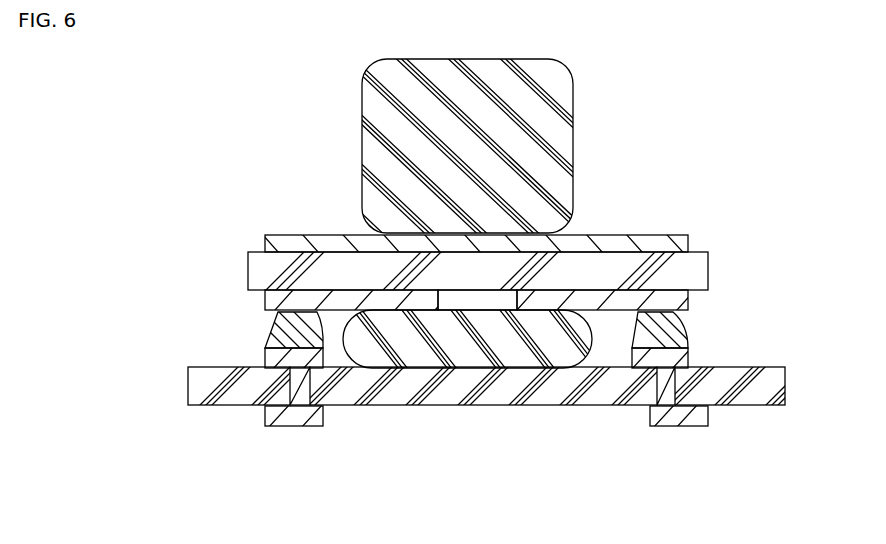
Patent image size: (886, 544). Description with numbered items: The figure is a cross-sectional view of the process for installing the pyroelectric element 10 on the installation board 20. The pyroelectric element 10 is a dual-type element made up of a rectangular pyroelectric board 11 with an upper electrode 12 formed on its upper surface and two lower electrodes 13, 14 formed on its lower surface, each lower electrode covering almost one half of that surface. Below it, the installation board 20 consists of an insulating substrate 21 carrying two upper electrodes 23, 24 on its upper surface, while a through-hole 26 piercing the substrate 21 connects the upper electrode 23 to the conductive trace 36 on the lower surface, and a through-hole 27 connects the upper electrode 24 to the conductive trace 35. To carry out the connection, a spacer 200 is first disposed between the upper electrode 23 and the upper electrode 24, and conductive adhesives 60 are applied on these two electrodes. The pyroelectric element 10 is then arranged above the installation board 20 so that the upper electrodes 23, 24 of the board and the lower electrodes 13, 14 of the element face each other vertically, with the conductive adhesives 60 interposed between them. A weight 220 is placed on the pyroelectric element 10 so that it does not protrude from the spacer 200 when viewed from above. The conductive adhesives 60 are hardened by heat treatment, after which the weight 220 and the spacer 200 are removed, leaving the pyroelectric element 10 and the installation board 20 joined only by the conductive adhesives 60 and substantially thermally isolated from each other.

The pyroelectric element 10 is at (468, 246).
The pyroelectric board 11 is at (708, 268).
The upper electrode 12 is at (683, 234).
The lower electrode 13 is at (266, 300).
The lower electrode 14 is at (690, 303).
The installation board 20 is at (208, 410).
The substrate 21 is at (503, 445).
The upper electrode 23 is at (276, 358).
The upper electrode 24 is at (690, 361).
The through-hole 26 is at (303, 385).
The through-hole 27 is at (672, 382).
The conductive trace 35 is at (683, 420).
The conductive trace 36 is at (304, 421).
The conductive adhesive 60 is at (278, 330).
The spacer 200 is at (521, 359).
The weight 220 is at (560, 137).